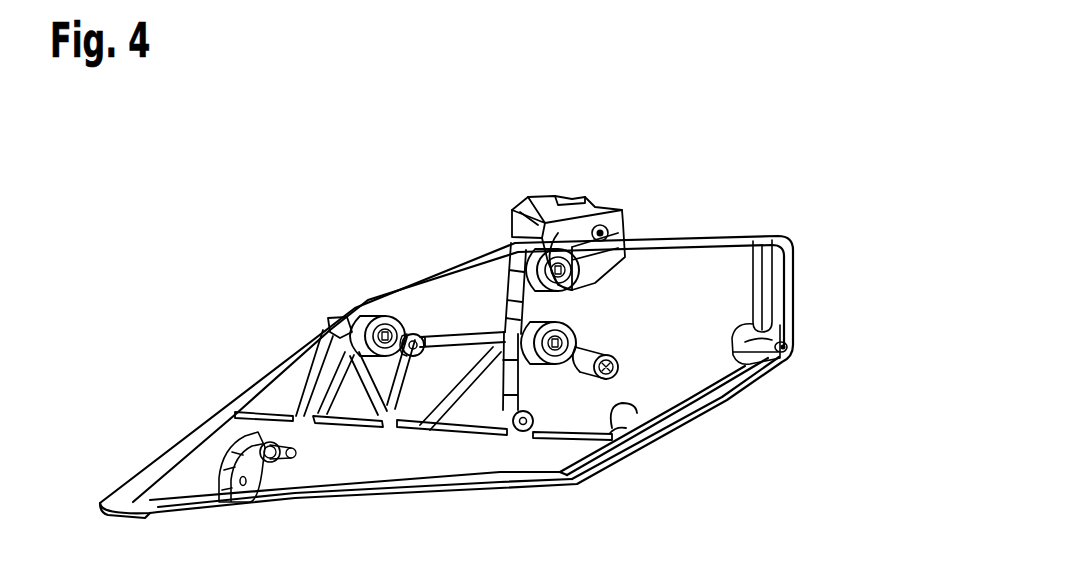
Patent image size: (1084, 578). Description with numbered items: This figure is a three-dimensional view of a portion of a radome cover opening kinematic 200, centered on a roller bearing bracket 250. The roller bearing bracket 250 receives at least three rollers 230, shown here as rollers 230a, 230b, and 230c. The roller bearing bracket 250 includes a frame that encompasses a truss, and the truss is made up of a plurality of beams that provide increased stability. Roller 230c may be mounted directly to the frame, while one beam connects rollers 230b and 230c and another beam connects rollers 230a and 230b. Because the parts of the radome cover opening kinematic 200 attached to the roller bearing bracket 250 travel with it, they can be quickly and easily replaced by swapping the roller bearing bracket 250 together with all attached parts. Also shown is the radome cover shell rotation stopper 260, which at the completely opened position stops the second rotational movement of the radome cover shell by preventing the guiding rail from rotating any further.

The radome cover opening kinematic 200 is at (684, 205).
The rollers 230 is at (582, 314).
The roller 230a is at (540, 270).
The roller 230b is at (580, 347).
The roller 230c is at (364, 314).
The roller bearing bracket 250 is at (633, 408).
The radome cover shell rotation stopper 260 is at (522, 228).